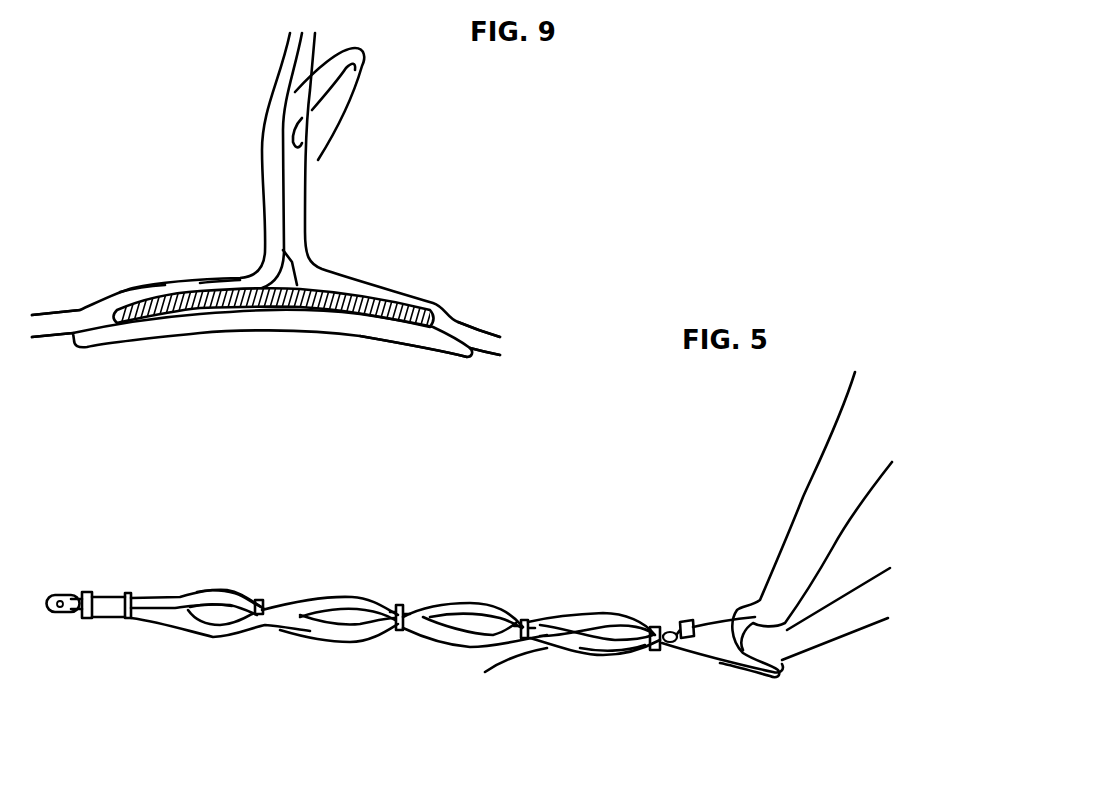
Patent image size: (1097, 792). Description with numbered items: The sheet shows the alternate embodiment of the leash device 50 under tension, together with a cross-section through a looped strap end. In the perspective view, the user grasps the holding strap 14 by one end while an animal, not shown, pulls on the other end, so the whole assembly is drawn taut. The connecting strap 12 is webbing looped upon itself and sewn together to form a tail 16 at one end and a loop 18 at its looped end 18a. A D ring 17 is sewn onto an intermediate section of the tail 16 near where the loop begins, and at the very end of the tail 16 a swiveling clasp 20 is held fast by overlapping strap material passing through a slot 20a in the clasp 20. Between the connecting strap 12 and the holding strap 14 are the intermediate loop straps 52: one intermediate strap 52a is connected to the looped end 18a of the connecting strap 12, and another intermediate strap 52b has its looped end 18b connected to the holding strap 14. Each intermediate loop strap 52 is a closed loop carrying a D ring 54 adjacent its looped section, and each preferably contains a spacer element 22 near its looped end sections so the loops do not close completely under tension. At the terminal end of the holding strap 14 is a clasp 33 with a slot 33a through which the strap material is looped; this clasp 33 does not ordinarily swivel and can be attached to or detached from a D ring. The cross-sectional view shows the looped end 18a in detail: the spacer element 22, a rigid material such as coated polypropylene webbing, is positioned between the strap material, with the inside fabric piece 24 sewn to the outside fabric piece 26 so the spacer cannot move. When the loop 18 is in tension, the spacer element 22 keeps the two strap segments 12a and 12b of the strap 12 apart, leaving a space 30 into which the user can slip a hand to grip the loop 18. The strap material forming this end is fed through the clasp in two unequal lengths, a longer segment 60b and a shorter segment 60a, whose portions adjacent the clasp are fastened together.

In FIG. 5, the connecting strap 12 is at (192, 623).
In FIG. 5, the strap segment 12a is at (250, 600).
In FIG. 5, the strap segment 12b is at (218, 632).
In FIG. 5, the holding strap 14 is at (720, 662).
In FIG. 5, the tail 16 is at (108, 602).
In FIG. 5, the D ring 17 is at (127, 607).
In FIG. 5, the loop 18 is at (224, 580).
In FIG. 9, the looped end 18a is at (148, 285).
In FIG. 5, the looped end 18a is at (247, 598).
In FIG. 5, the looped end 18b is at (628, 648).
In FIG. 5, the clasp 20 is at (63, 617).
In FIG. 5, the slot 20a is at (87, 618).
In FIG. 9, the spacer element 22 is at (373, 307).
In FIG. 9, the inside fabric piece 24 is at (403, 325).
In FIG. 9, the outside fabric piece 26 is at (223, 282).
In FIG. 5, the space 30 is at (213, 620).
In FIG. 5, the clasp 33 is at (662, 632).
In FIG. 5, the slot 33a is at (690, 625).
In FIG. 5, the device 50 is at (552, 668).
In FIG. 5, the intermediate loop strap 52 is at (453, 648).
In FIG. 5, the intermediate strap 52a is at (350, 595).
In FIG. 5, the intermediate strap 52b is at (603, 618).
In FIG. 9, the D ring 54 is at (352, 108).
In FIG. 5, the D ring 54 is at (402, 617).
In FIG. 9, the segment 60a is at (473, 327).
In FIG. 9, the segment 60b is at (82, 315).